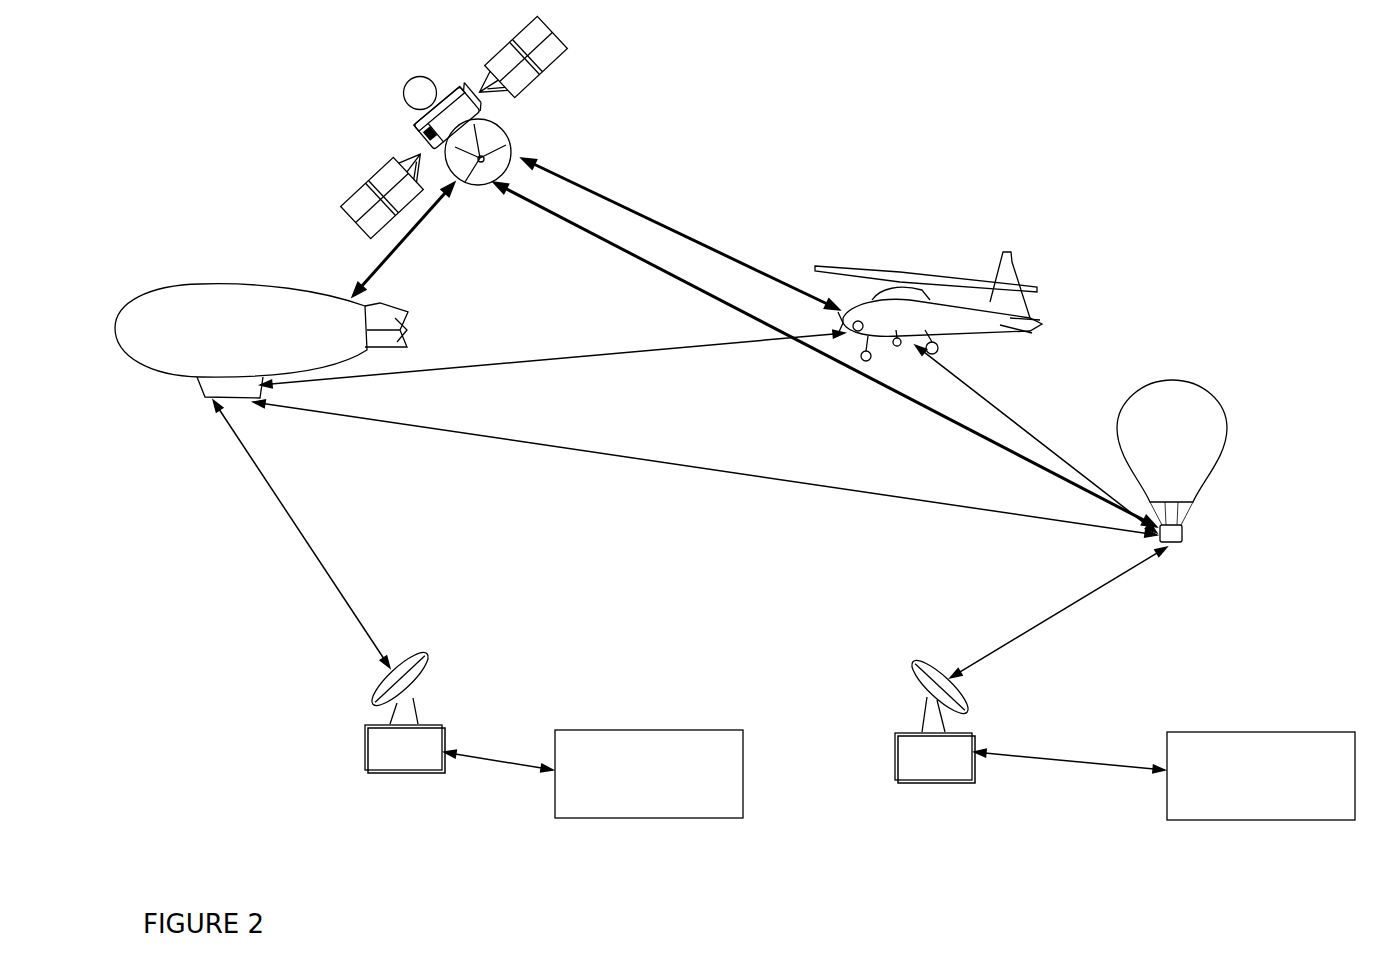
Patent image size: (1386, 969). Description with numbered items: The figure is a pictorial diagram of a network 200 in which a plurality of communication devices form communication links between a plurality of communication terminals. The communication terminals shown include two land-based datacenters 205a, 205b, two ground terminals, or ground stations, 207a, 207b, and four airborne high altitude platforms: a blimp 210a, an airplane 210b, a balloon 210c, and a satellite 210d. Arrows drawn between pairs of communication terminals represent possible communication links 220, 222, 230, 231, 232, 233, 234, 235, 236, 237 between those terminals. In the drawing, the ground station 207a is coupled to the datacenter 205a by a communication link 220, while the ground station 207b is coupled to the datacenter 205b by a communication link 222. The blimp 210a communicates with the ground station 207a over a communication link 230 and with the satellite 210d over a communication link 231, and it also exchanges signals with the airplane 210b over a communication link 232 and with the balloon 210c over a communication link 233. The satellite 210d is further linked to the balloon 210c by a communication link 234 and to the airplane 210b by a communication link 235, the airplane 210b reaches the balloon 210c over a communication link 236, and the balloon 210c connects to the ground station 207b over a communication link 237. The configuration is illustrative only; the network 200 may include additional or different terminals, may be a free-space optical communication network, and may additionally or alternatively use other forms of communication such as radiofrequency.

The network 200 is at (223, 900).
The land-based datacenter 205a is at (649, 774).
The land-based datacenter 205b is at (1261, 776).
The ground station 207a is at (405, 709).
The ground station 207b is at (935, 718).
The high altitude platform (blimp) 210a is at (241, 297).
The high altitude platform (airplane) 210b is at (890, 282).
The high altitude platform (balloon) 210c is at (1182, 400).
The high altitude platform (satellite) 210d is at (404, 93).
The communication link 220 is at (498, 772).
The communication link 222 is at (1069, 773).
The communication link 230 is at (301, 534).
The communication link 231 is at (403, 239).
The communication link 232 is at (552, 360).
The communication link 233 is at (705, 468).
The communication link 234 is at (825, 354).
The communication link 235 is at (680, 234).
The communication link 236 is at (1036, 439).
The communication link 237 is at (1058, 612).